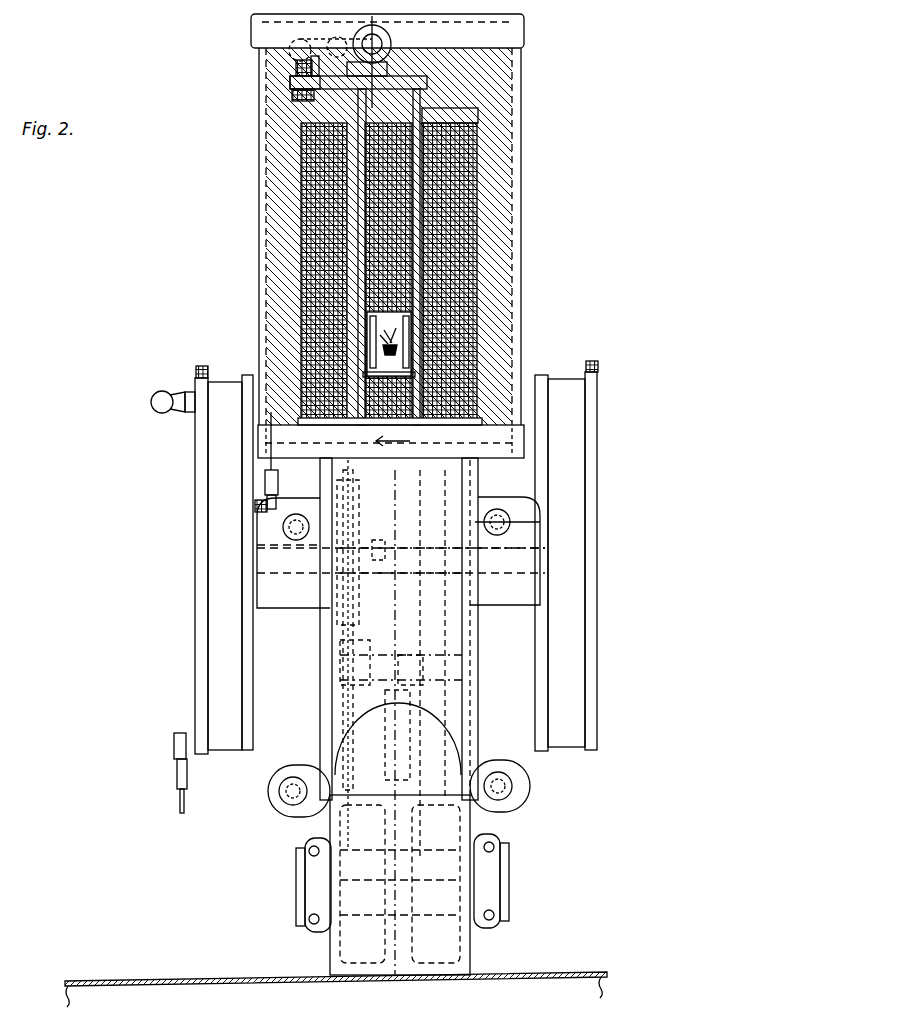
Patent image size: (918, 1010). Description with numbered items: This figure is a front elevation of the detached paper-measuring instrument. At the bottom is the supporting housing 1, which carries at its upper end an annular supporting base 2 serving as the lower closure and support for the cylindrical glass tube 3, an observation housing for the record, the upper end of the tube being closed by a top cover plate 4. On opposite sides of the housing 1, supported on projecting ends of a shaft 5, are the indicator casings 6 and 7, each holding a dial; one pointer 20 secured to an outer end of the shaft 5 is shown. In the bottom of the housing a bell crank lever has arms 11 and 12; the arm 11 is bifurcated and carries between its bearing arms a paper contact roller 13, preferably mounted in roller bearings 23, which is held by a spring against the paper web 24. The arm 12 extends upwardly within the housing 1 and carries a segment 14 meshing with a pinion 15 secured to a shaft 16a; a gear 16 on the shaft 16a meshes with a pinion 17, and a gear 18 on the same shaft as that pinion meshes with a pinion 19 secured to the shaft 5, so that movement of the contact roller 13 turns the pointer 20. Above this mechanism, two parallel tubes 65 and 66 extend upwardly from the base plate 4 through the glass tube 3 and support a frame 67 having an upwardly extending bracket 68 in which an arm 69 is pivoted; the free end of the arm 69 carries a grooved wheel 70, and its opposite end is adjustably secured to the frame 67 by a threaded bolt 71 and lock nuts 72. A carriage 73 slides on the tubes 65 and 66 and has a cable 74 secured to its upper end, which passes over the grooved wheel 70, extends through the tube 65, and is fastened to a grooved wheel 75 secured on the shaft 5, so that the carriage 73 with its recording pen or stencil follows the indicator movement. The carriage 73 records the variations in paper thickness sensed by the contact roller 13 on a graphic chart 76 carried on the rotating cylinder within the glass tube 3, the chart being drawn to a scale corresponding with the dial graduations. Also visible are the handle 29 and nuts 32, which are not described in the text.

The supporting housing 1 is at (458, 705).
The annular supporting base 2 is at (495, 458).
The cylindrical glass tube 3 is at (262, 213).
The top cover plate 4 is at (496, 33).
The shaft 5 is at (290, 610).
The indicator casing 6 is at (222, 395).
The indicator casing 7 is at (565, 400).
The arm of bell crank lever 11 is at (420, 860).
The arm of bell crank lever 12 is at (412, 785).
The paper contact roller 13 is at (340, 948).
The segment 14 is at (470, 676).
The pinion 15 is at (408, 656).
The gear 16 is at (378, 765).
The shaft 16a is at (462, 652).
The pinion 17 is at (386, 548).
The gear 18 is at (330, 657).
The pinion 19 is at (328, 612).
The pointer 20 is at (174, 745).
The roller bearing 23 is at (308, 880).
The paper web 24 is at (222, 976).
The handle 29 is at (162, 391).
The nut 32 is at (398, 358).
The tube 65 is at (345, 80).
The tube 66 is at (424, 97).
The frame 67 is at (418, 78).
The bracket 68 is at (312, 76).
The arm 69 is at (292, 82).
The grooved wheel 70 is at (390, 60).
The threaded bolt 71 is at (296, 68).
The lock nuts 72 is at (292, 95).
The carriage 73 is at (402, 333).
The cable 74 is at (386, 66).
The grooved wheel 75 is at (370, 505).
The graphic chart 76 is at (302, 262).